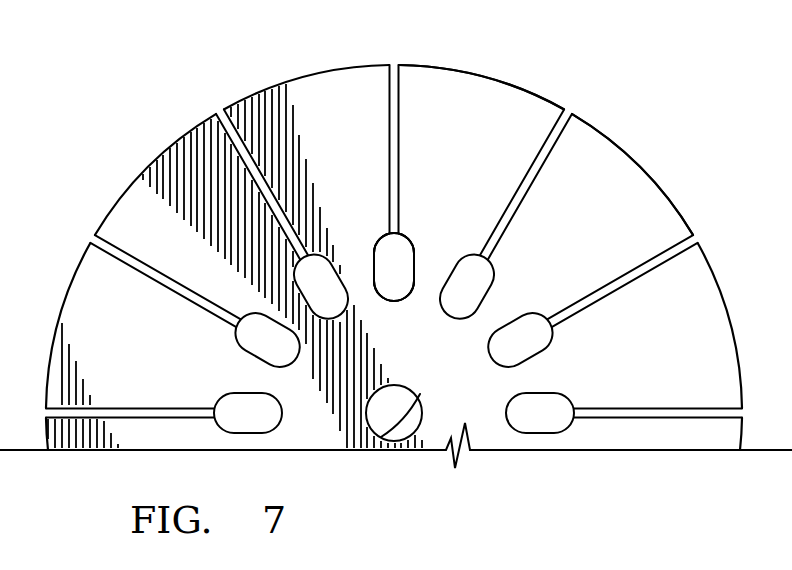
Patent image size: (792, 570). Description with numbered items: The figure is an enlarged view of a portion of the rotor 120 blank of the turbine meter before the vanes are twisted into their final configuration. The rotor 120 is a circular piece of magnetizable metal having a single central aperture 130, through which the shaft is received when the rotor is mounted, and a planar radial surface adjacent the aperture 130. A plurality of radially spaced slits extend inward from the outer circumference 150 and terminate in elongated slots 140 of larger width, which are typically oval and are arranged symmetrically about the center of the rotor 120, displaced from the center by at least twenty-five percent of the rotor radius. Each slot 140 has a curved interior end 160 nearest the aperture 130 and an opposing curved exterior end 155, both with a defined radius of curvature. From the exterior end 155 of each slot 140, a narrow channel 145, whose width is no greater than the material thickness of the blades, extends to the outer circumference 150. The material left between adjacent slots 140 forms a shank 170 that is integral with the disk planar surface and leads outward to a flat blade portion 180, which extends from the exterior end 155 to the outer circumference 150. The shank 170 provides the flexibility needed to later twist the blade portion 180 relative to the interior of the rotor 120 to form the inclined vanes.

The rotor 120 is at (333, 445).
The central aperture 130 is at (422, 400).
The elongated slots 140 is at (416, 261).
The narrow channel 145 is at (400, 160).
The outer circumference 150 is at (317, 74).
The exterior end 155 is at (408, 237).
The interior end 160 is at (400, 302).
The shank portion 170 is at (498, 315).
The blade portion 180 is at (500, 103).